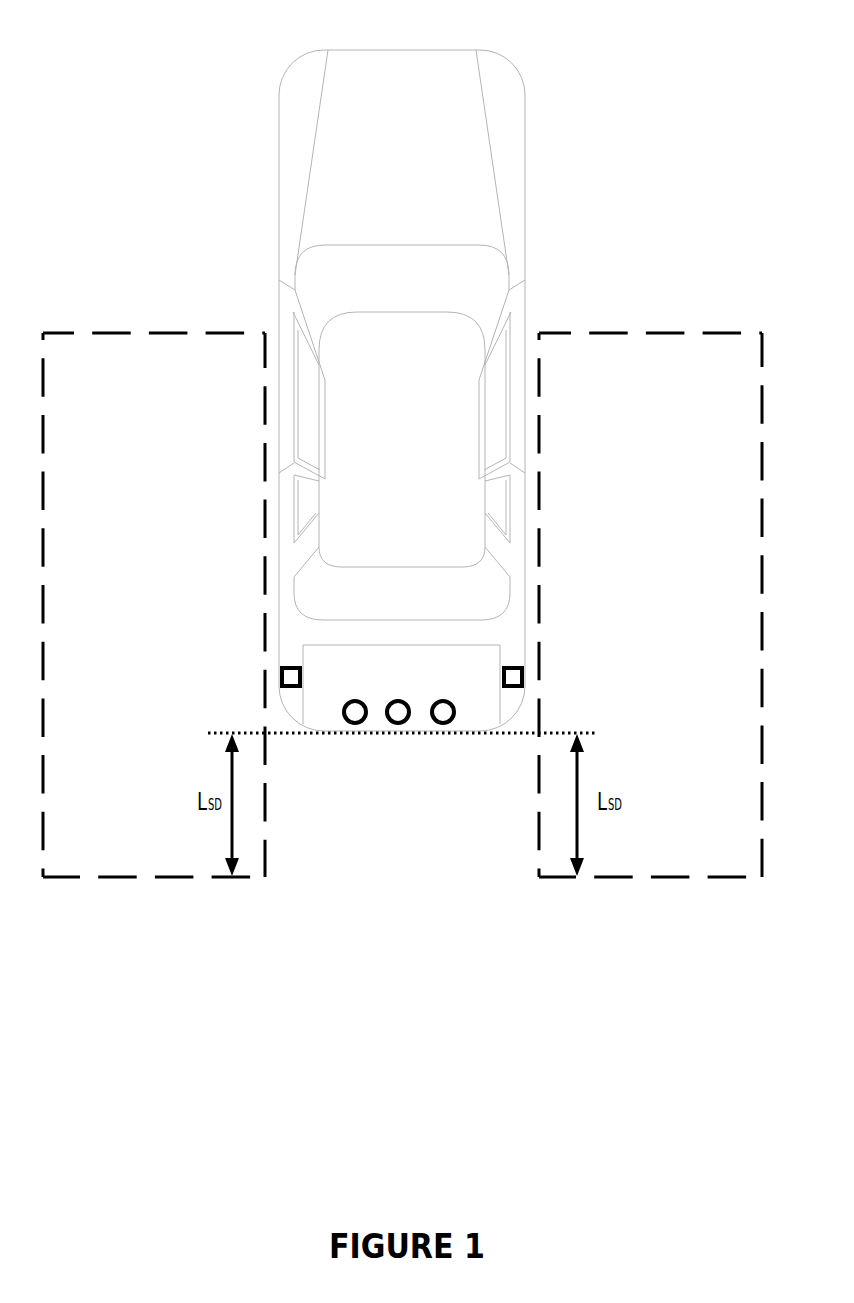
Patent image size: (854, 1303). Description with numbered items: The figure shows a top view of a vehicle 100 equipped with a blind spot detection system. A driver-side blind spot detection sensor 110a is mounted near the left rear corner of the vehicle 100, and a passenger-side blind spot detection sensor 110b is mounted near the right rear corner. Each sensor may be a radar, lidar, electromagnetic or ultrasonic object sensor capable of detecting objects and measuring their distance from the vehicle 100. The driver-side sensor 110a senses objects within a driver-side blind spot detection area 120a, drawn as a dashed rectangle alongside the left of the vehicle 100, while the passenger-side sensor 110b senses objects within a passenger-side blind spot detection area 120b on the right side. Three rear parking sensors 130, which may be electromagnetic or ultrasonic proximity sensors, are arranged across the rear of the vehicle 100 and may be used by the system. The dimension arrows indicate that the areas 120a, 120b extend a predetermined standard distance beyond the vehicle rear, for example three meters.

The vehicle 100 is at (408, 50).
The driver-side blind spot detection sensor 110a is at (281, 667).
The passenger-side blind spot detection sensor 110b is at (523, 667).
The driver-side blind spot detection area 120a is at (144, 333).
The passenger-side blind spot detection area 120b is at (688, 333).
The rear parking sensors 130 is at (354, 701).